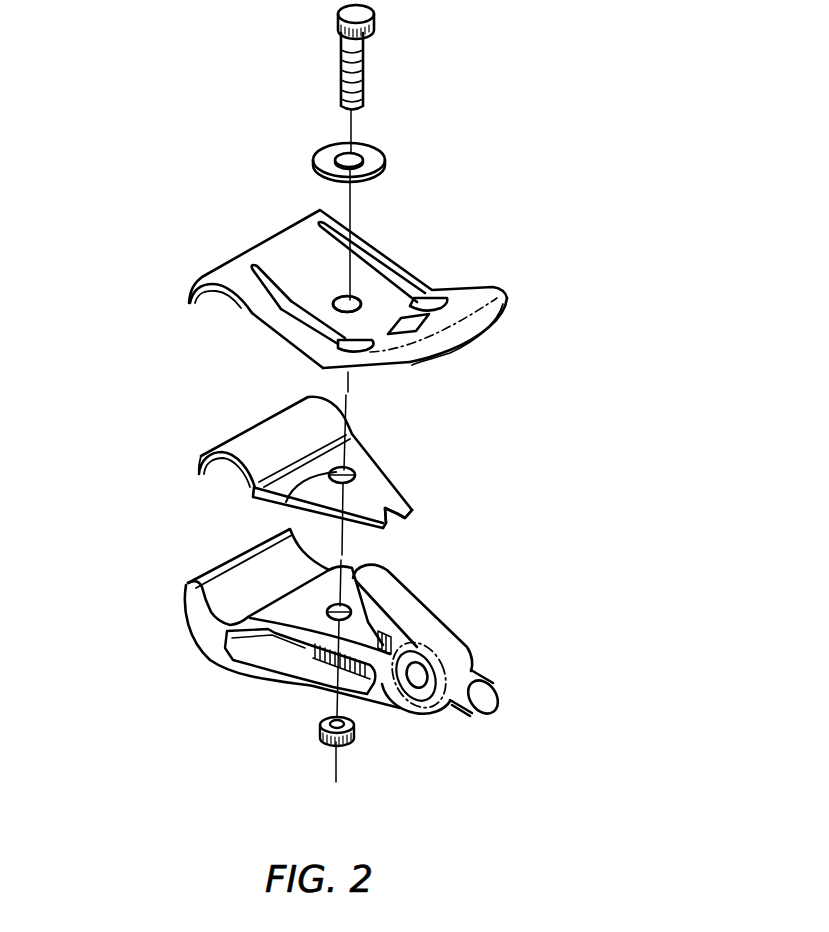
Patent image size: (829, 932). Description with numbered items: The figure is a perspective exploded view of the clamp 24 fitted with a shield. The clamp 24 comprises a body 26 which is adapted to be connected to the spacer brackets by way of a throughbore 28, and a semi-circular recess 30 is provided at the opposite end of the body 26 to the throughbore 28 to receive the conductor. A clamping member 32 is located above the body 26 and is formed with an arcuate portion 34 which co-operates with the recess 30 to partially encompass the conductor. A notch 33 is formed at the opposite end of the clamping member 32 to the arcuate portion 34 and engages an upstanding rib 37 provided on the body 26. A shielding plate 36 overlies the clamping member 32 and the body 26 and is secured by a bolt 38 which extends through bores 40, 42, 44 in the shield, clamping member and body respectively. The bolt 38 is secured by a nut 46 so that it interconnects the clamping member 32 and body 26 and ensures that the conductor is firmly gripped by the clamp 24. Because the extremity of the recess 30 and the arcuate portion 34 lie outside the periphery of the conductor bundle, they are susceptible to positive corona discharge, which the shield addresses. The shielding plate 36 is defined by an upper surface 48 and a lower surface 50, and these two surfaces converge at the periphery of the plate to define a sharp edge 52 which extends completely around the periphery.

The clamp 24 is at (165, 539).
The body 26 is at (207, 651).
The throughbore 28 is at (413, 677).
The semi-circular recess 30 is at (219, 597).
The clamping member 32 is at (372, 467).
The notch 33 is at (393, 518).
The arcuate portion 34 is at (261, 427).
The shielding plate 36 is at (247, 250).
The upstanding rib 37 is at (383, 688).
The bolt 38 is at (364, 72).
The bore 40 is at (357, 298).
The bore 42 is at (286, 502).
The bore 44 is at (299, 630).
The nut 46 is at (318, 733).
The upper surface 48 is at (449, 332).
The lower surface 50 is at (416, 355).
The sharp edge 52 is at (284, 343).